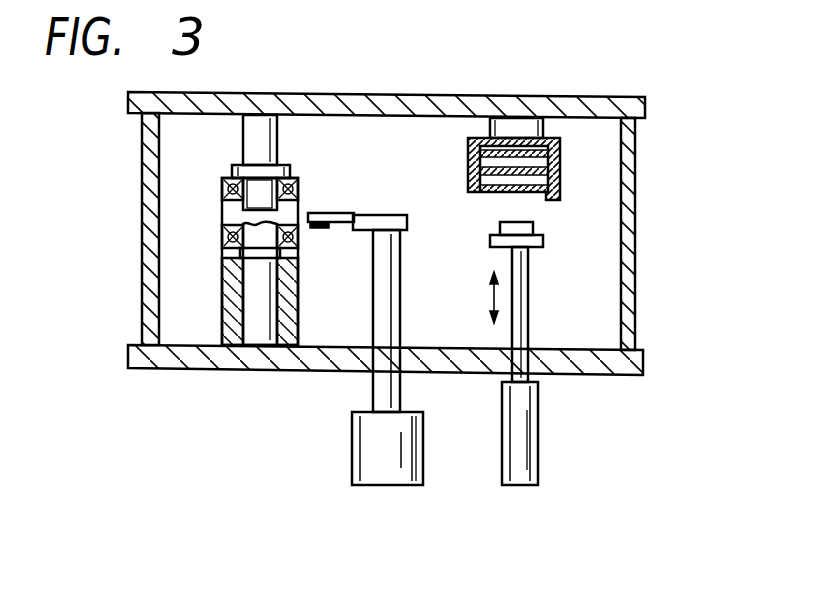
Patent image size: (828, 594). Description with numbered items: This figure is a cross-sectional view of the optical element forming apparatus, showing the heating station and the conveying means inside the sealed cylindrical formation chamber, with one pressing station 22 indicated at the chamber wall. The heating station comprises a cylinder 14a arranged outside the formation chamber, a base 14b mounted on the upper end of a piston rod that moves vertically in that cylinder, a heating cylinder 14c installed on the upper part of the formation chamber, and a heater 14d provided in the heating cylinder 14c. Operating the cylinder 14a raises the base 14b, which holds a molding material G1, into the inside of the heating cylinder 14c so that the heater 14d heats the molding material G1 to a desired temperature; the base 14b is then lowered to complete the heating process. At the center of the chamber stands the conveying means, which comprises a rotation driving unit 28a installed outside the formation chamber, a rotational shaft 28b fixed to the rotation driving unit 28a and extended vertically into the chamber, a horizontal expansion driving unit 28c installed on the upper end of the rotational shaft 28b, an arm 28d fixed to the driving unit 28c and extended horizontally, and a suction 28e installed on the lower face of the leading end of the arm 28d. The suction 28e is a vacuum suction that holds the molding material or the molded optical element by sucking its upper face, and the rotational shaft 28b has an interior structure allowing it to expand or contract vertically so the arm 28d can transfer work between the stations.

The pressing station 22 is at (182, 185).
The rotation driving unit 28a is at (352, 443).
The rotational shaft 28b is at (395, 352).
The horizontal expansion driving unit 28c is at (393, 215).
The arm 28d is at (333, 212).
The suction 28e is at (323, 230).
The cylinder 14a is at (525, 451).
The base 14b is at (544, 241).
The heating cylinder 14c is at (562, 173).
The heater 14d is at (562, 155).
The molding material G1 is at (534, 223).